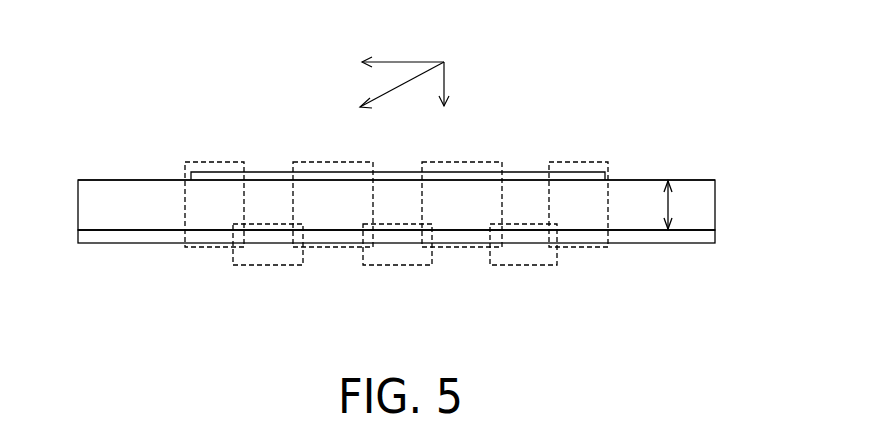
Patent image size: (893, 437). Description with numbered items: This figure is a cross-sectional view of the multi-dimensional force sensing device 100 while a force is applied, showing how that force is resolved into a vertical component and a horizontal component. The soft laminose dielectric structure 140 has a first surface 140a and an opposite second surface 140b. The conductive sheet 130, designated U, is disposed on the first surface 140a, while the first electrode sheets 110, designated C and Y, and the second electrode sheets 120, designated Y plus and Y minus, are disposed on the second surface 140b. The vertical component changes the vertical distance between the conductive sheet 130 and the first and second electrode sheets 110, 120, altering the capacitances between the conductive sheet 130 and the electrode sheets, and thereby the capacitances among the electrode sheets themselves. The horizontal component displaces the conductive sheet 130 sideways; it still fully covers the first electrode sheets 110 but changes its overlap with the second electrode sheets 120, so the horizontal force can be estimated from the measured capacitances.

The multi-dimensional force sensing device 100 is at (409, 168).
The first electrode sheet 110 is at (351, 251).
The second electrode sheet 120 is at (86, 238).
The conductive sheet 130 is at (586, 167).
The soft laminose dielectric structure 140 is at (707, 207).
The first surface 140a is at (172, 180).
The second surface 140b is at (158, 233).